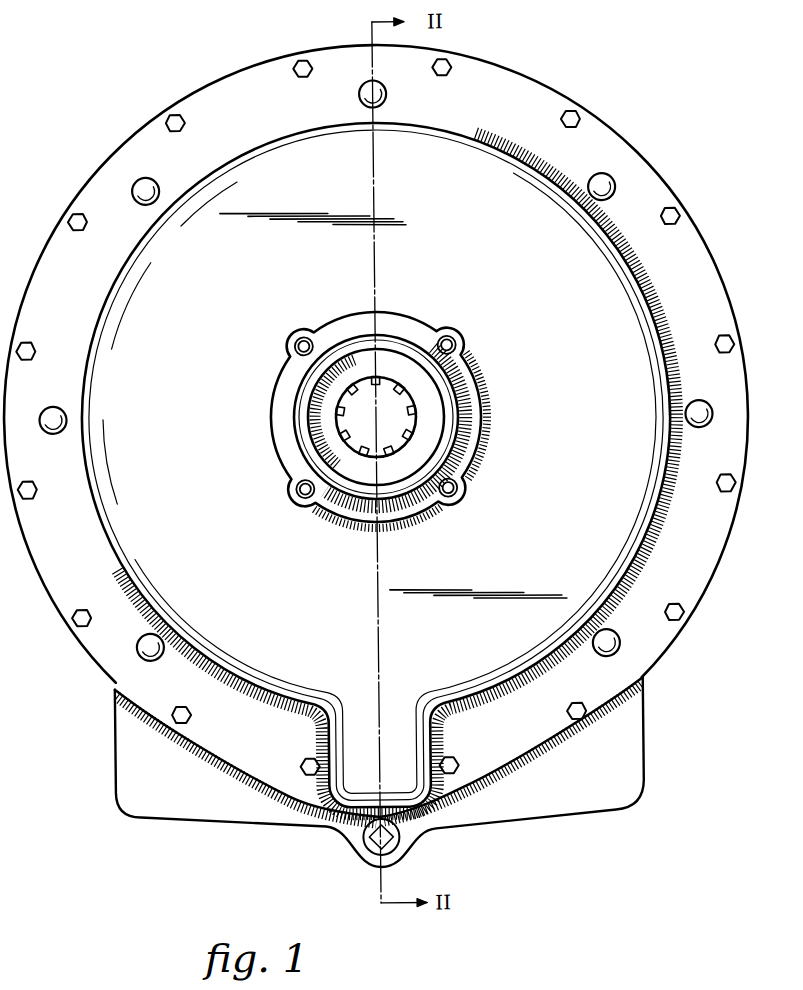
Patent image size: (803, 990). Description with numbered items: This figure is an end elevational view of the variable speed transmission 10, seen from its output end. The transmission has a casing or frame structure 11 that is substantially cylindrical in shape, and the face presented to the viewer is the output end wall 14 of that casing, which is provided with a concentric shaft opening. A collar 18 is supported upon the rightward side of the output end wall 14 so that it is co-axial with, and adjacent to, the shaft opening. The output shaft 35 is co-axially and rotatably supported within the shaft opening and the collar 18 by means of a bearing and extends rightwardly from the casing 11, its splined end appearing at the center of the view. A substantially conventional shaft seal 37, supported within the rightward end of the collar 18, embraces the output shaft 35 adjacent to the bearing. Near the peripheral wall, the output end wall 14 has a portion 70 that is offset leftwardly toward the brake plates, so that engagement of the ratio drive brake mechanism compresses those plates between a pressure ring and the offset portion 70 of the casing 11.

The variable speed transmission 10 is at (376, 451).
The casing or frame structure 11 is at (145, 120).
The output end wall 14 is at (597, 457).
The collar 18 is at (390, 345).
The output shaft 35 is at (398, 423).
The shaft seal 37 is at (433, 399).
The offset portion 70 is at (495, 96).